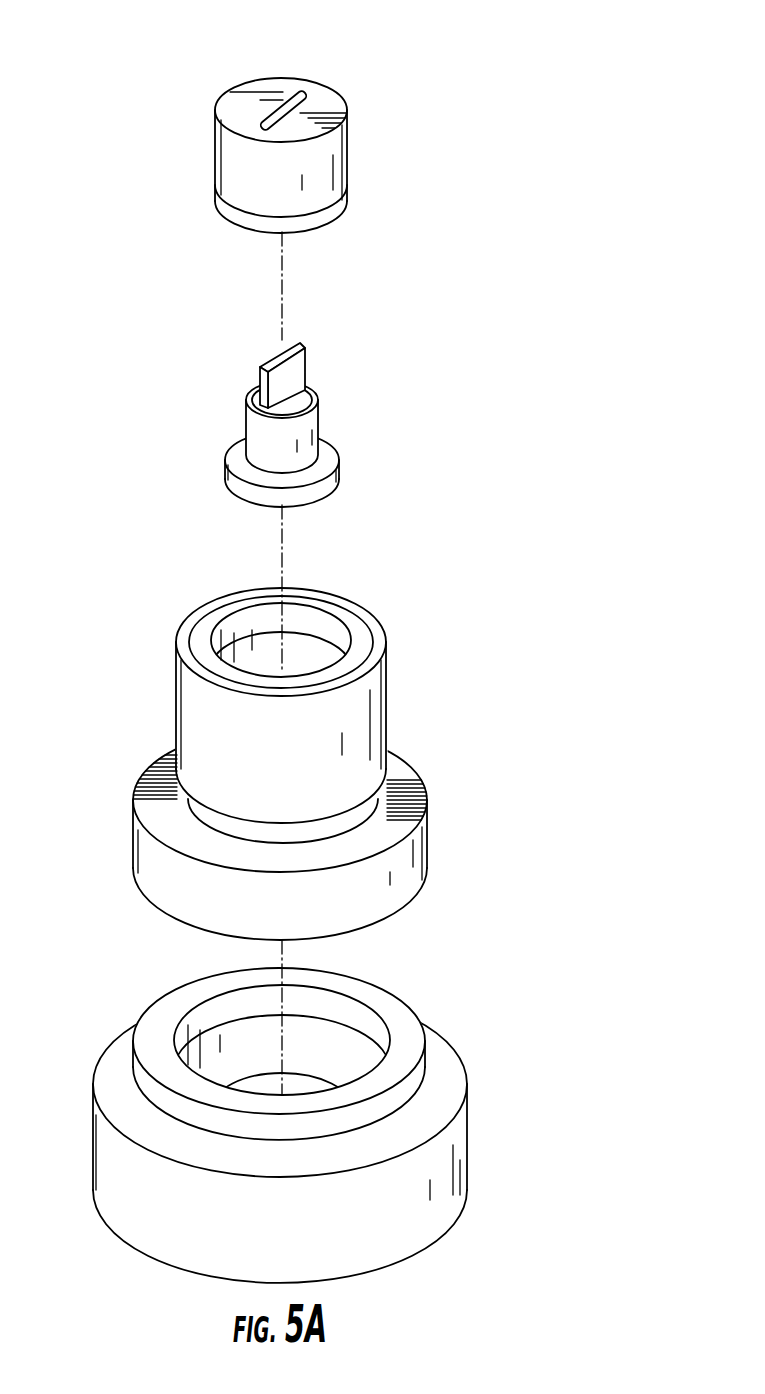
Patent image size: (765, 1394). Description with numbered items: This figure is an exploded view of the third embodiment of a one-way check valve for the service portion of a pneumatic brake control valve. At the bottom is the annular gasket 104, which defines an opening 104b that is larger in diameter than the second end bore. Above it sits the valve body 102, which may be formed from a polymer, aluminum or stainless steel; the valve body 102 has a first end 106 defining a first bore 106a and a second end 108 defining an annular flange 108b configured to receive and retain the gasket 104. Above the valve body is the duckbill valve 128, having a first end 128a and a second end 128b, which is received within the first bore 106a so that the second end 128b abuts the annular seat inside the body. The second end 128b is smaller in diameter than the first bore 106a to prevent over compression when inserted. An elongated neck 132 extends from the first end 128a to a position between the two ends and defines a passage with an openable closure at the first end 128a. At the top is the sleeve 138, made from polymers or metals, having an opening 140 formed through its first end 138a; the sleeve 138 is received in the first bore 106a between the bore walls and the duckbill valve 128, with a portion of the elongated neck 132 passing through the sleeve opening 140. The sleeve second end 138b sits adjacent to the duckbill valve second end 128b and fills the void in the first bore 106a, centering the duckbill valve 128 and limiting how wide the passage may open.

The valve body 102 is at (281, 753).
The annular gasket 104 is at (313, 1111).
The opening 104b is at (367, 1050).
The first end 106 is at (288, 694).
The first bore 106a is at (324, 650).
The second end 108 is at (281, 834).
The annular flange 108b is at (140, 858).
The duckbill valve 128 is at (331, 410).
The first end 128a is at (258, 364).
The second end 128b is at (332, 470).
The elongated neck 132 is at (296, 370).
The sleeve 138 is at (314, 139).
The first end 138a is at (218, 105).
The second end 138b is at (340, 194).
The opening 140 is at (298, 95).